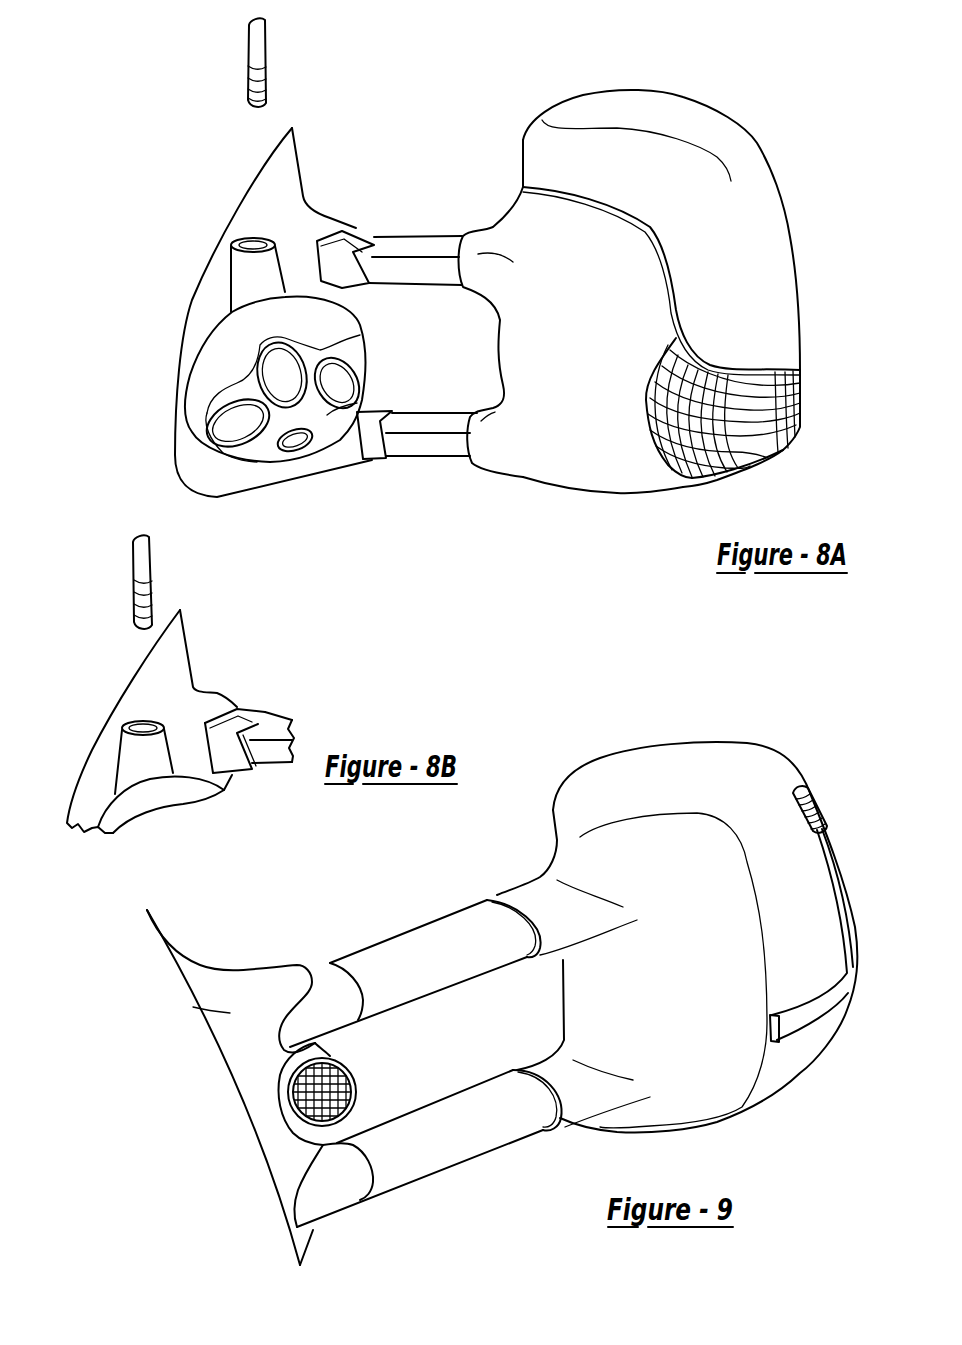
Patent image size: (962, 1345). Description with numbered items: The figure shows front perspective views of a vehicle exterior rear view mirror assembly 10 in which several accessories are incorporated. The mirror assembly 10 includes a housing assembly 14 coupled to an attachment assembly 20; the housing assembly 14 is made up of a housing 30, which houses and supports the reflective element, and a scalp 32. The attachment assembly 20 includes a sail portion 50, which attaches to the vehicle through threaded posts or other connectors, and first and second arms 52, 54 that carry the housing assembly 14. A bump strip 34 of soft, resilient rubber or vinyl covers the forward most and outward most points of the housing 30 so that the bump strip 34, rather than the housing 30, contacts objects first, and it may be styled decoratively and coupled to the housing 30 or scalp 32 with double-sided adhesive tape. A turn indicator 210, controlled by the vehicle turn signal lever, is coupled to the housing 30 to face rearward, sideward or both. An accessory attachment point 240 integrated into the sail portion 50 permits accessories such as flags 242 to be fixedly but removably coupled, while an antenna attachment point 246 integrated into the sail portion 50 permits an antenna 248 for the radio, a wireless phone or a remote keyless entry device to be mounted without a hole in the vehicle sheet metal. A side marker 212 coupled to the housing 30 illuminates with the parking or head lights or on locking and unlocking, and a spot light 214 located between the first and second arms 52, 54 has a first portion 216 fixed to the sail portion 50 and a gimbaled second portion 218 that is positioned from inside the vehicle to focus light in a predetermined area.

In FIG. 8A, the mirror assembly 10 is at (499, 274).
In FIG. 8B, the mirror assembly 10 is at (168, 709).
In FIG. 9, the mirror assembly 10 is at (516, 966).
In FIG. 8A, the housing assembly 14 is at (651, 307).
In FIG. 9, the housing assembly 14 is at (692, 900).
In FIG. 8A, the attachment assembly 20 is at (316, 257).
In FIG. 8B, the attachment assembly 20 is at (168, 684).
In FIG. 9, the attachment assembly 20 is at (353, 1069).
In FIG. 8A, the housing 30 is at (783, 254).
In FIG. 9, the housing 30 is at (771, 746).
In FIG. 8A, the scalp 32 is at (632, 180).
In FIG. 9, the scalp 32 is at (728, 916).
In FIG. 8A, the bump strip 34 is at (607, 482).
In FIG. 9, the bump strip 34 is at (832, 1000).
In FIG. 8A, the sail portion 50 is at (268, 171).
In FIG. 8B, the sail portion 50 is at (137, 675).
In FIG. 9, the sail portion 50 is at (197, 1008).
In FIG. 9, the first arm 52 is at (420, 940).
In FIG. 9, the second arm 54 is at (450, 1150).
In FIG. 8A, the turn indicator 210 is at (755, 455).
In FIG. 9, the side marker 212 is at (803, 786).
In FIG. 9, the spot light 214 is at (360, 1072).
In FIG. 9, the first portion 216 is at (329, 1052).
In FIG. 9, the second portion 218 is at (333, 1097).
In FIG. 8A, the accessory attachment point 240 is at (222, 250).
In FIG. 8A, the flag 242 is at (262, 57).
In FIG. 8B, the antenna attachment point 246 is at (125, 748).
In FIG. 8B, the antenna 248 is at (150, 568).